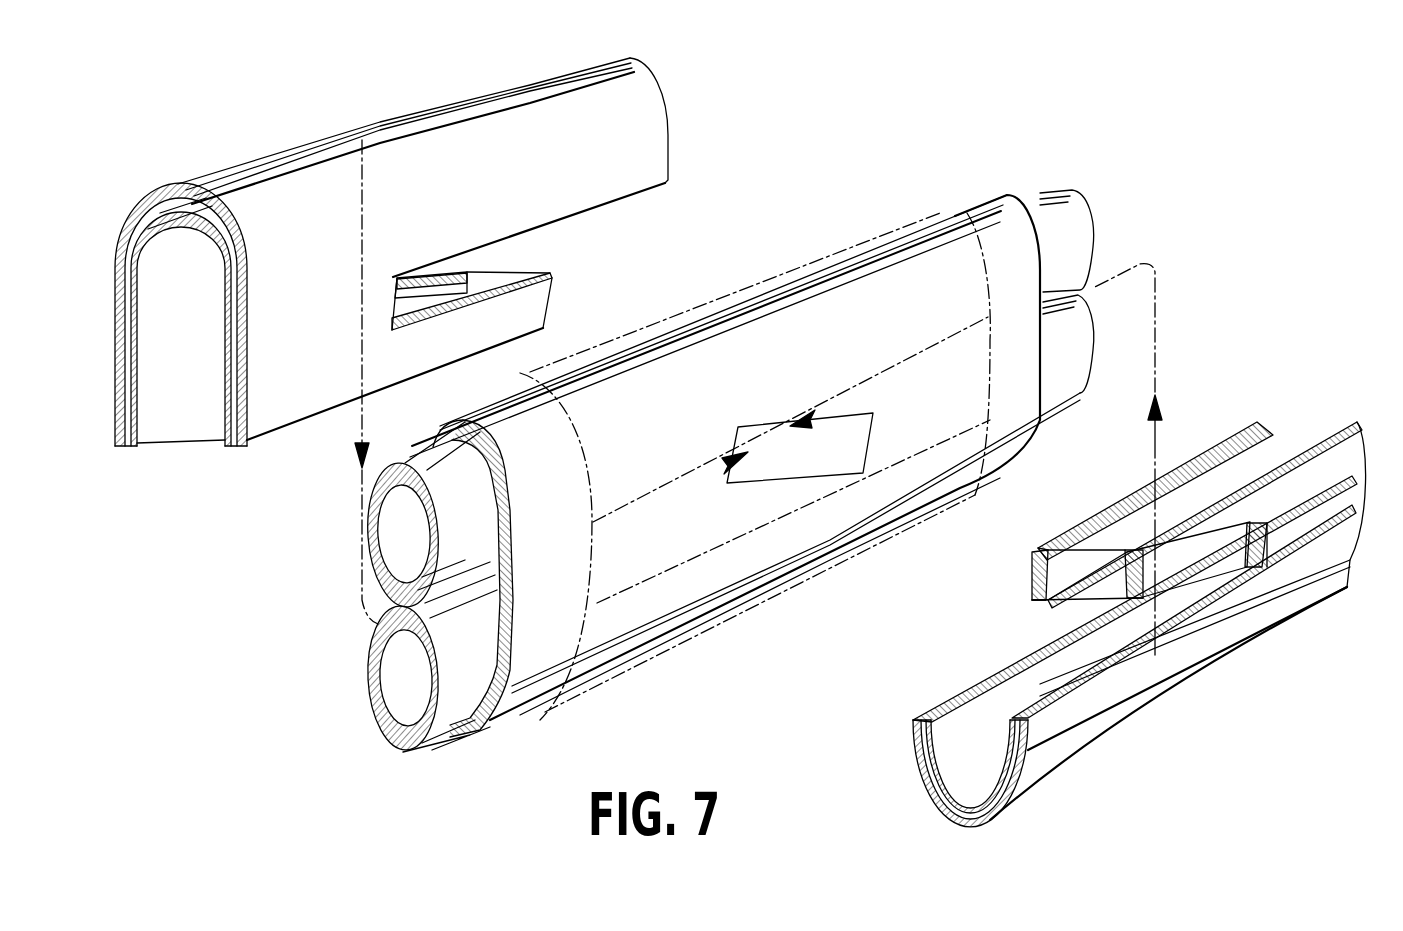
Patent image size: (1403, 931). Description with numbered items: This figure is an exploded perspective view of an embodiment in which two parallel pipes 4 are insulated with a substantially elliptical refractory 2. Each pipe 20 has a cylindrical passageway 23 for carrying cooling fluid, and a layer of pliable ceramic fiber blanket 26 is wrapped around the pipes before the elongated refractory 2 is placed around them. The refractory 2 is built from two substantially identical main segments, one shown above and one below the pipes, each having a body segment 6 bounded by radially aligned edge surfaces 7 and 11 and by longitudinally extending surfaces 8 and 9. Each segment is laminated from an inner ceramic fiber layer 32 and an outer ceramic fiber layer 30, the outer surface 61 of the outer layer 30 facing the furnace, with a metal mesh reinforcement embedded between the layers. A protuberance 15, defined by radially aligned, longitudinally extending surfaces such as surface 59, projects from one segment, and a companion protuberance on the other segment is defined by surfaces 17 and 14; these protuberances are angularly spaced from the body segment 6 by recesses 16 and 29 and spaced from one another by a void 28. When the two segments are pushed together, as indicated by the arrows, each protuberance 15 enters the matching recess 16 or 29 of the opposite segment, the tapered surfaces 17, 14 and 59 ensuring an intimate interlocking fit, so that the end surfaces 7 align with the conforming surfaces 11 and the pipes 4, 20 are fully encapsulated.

The refractory 2 is at (720, 498).
The pipes 4 is at (1093, 230).
The body segment 6 is at (716, 432).
The radially aligned edge surface 7 is at (648, 78).
The longitudinally extending surface 8 is at (652, 190).
The longitudinally extending surface 9 is at (1111, 624).
The radially aligned edge surface 11 is at (143, 207).
The radially aligned longitudinally extending surface 14 is at (513, 335).
The protuberance 15 is at (1030, 568).
The recess 16 is at (503, 267).
The radially aligned longitudinally extending surface 17 is at (530, 277).
The pipe 20 is at (373, 648).
The cylindrical passageway 23 is at (408, 670).
The ceramic fiber blanket 26 is at (473, 730).
The void 28 is at (203, 448).
The recess 29 is at (1107, 583).
The outer ceramic fiber layer 30 is at (1065, 548).
The inner ceramic fiber layer 32 is at (1030, 593).
The radially aligned longitudinally extending surface 59 is at (158, 446).
The outer surface 61 is at (285, 150).